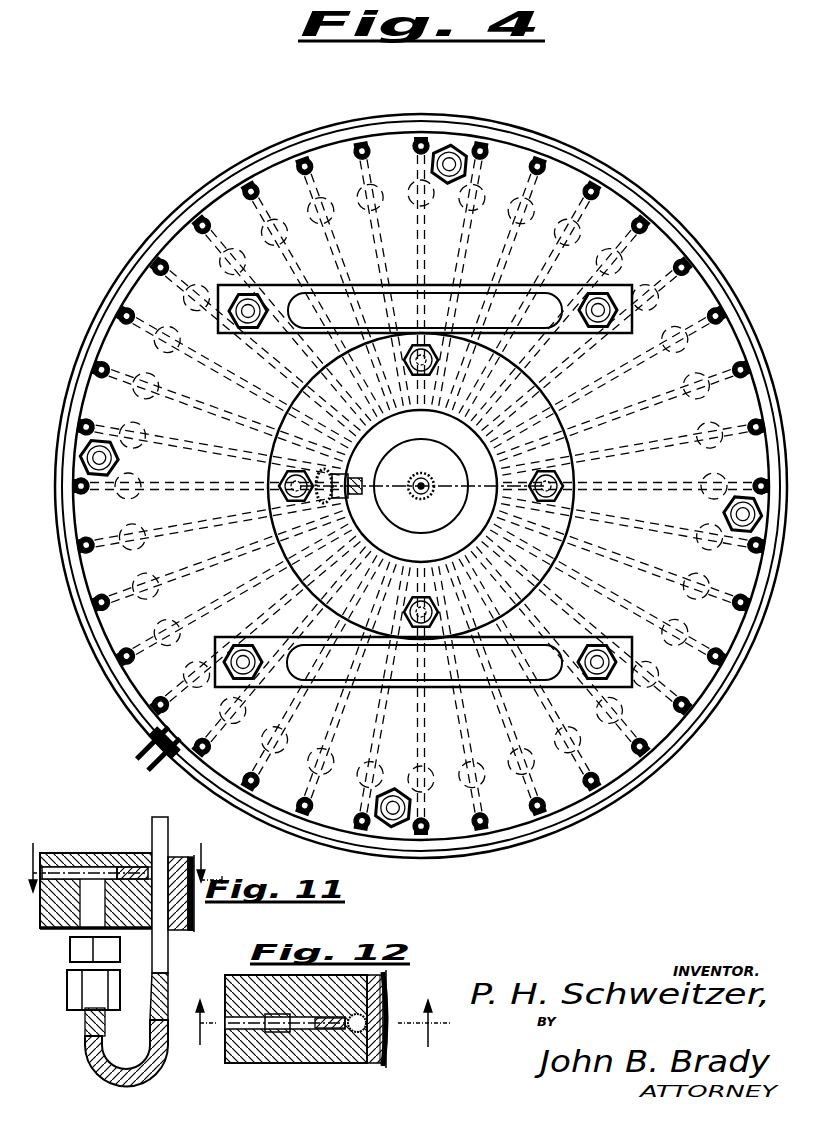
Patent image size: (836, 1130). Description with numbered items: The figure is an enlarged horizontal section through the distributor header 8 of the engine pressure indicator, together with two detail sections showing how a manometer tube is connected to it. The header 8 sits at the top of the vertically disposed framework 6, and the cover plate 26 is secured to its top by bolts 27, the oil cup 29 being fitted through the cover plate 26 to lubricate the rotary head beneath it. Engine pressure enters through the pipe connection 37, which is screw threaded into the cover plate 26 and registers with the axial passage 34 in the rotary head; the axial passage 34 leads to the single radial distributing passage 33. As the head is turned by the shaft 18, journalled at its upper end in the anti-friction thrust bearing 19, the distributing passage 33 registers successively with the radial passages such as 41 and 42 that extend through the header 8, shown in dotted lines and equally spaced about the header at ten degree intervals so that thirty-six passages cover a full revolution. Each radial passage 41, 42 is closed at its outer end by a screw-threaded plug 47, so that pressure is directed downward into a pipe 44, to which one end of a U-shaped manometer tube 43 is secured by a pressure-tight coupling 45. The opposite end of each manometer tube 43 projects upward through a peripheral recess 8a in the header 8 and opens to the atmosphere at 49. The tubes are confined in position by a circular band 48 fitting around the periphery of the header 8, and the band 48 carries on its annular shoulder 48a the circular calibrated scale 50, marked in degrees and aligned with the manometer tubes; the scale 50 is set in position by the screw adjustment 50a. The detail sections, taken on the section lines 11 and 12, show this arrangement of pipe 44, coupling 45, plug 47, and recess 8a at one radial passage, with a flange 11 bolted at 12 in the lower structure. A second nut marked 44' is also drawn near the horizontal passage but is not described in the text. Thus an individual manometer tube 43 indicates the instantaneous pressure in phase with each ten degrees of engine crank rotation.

In FIG. 4, the framework 6 is at (458, 163).
In FIG. 4, the header 8 is at (237, 200).
In FIG. 11, the header 8 is at (50, 935).
In FIG. 12, the header 8 is at (322, 1058).
In FIG. 4, the peripheral recesses 8a is at (735, 355).
In FIG. 11, the peripheral recesses 8a is at (150, 930).
In FIG. 12, the peripheral recesses 8a is at (385, 1050).
In FIG. 12, the flange 11 is at (336, 1034).
In FIG. 11, the bolts 12 is at (122, 851).
In FIG. 4, the shaft 18 is at (430, 332).
In FIG. 4, the anti-friction thrust bearing 19 is at (405, 676).
In FIG. 4, the cover plate 26 is at (450, 432).
In FIG. 4, the bolts 27 is at (550, 480).
In FIG. 4, the oil cup 29 is at (338, 477).
In FIG. 4, the distributing passage 33 is at (422, 486).
In FIG. 4, the axial passage 34 is at (428, 484).
In FIG. 4, the pipe connection 37 is at (419, 498).
In FIG. 4, the radial passage 41 is at (207, 479).
In FIG. 4, the radial passage 42 is at (635, 479).
In FIG. 11, the radial passage 42 is at (72, 866).
In FIG. 12, the radial passage 42 is at (255, 1030).
In FIG. 4, the manometer tubes 43 is at (652, 222).
In FIG. 11, the manometer tubes 43 is at (130, 1020).
In FIG. 11, the pipe 44 is at (72, 967).
In FIG. 12, the pipe 44 is at (273, 1053).
In FIG. 4, the nut 44' is at (632, 523).
In FIG. 11, the coupling 45 is at (92, 980).
In FIG. 11, the screw-threaded plug 47 is at (122, 866).
In FIG. 12, the screw-threaded plug 47 is at (340, 1035).
In FIG. 4, the band 48 is at (668, 742).
In FIG. 11, the band 48 is at (181, 933).
In FIG. 12, the band 48 is at (390, 980).
In FIG. 11, the annular shoulder 48a is at (192, 935).
In FIG. 11, the atmospheric opening 49 is at (162, 817).
In FIG. 12, the atmospheric opening 49 is at (390, 1015).
In FIG. 4, the circular calibrated scale 50 is at (728, 689).
In FIG. 11, the circular calibrated scale 50 is at (193, 925).
In FIG. 12, the circular calibrated scale 50 is at (388, 1000).
In FIG. 4, the screw adjustment 50a is at (136, 756).